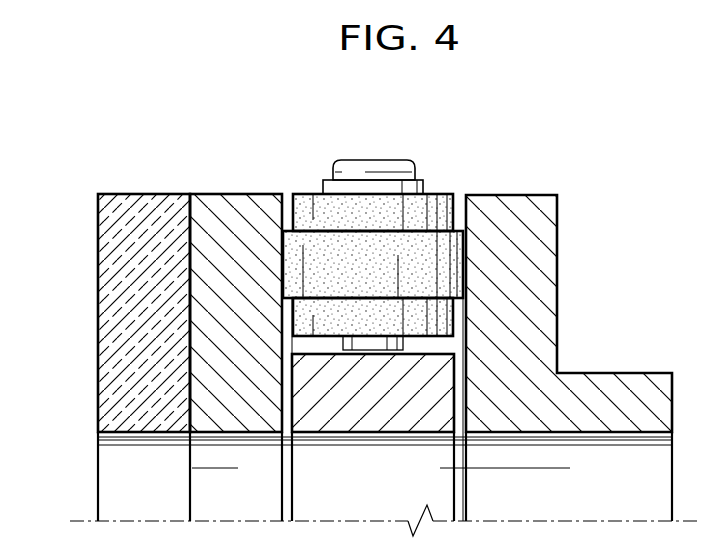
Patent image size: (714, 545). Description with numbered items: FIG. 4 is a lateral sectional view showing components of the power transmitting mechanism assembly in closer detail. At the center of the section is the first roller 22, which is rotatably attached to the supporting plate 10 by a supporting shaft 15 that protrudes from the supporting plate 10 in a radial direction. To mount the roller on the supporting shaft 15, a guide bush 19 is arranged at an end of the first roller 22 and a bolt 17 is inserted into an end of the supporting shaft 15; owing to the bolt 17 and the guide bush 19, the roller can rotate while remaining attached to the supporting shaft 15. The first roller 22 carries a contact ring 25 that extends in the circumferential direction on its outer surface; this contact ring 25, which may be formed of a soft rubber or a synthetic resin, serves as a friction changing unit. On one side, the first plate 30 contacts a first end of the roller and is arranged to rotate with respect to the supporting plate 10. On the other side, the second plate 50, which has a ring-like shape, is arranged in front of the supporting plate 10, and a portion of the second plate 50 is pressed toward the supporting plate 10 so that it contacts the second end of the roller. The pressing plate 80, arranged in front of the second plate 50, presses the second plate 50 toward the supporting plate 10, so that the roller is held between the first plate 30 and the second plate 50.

The supporting plate 10 is at (440, 382).
The supporting shaft 15 is at (398, 347).
The bolt 17 is at (397, 161).
The guide bush 19 is at (420, 191).
The first roller 22 is at (292, 214).
The contact ring 25 is at (285, 303).
The first plate 30 is at (532, 280).
The second plate 50 is at (203, 273).
The pressing plate 80 is at (108, 213).